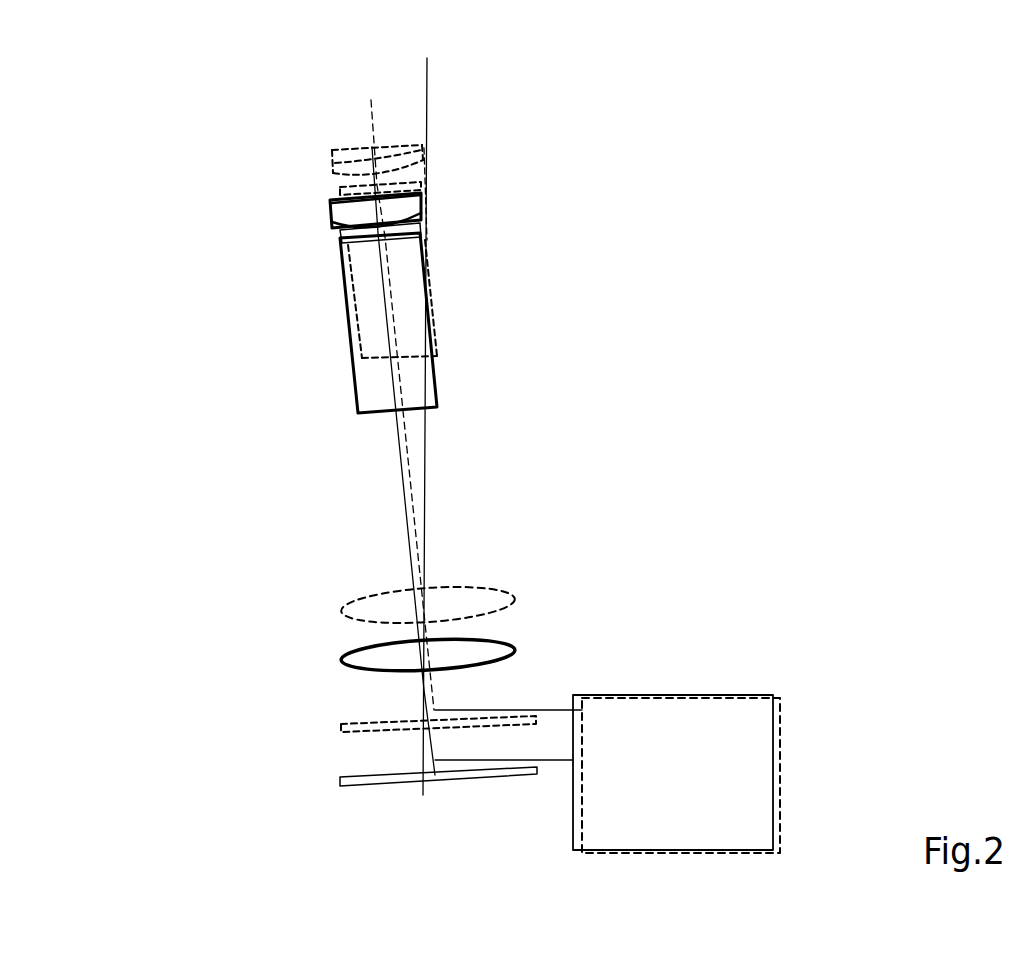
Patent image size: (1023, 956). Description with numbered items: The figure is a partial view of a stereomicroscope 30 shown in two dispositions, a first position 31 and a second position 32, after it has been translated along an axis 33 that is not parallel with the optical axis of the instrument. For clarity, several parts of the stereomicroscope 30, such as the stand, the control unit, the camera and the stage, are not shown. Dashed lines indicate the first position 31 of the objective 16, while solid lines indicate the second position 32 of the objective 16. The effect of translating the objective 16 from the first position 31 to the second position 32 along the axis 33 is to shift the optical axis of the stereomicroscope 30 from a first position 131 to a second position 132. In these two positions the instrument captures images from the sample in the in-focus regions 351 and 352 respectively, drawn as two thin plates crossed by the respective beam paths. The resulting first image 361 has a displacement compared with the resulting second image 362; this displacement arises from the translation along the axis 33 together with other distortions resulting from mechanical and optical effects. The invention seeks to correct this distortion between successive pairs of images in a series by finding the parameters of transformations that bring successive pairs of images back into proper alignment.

The stereomicroscope 30 is at (290, 325).
The first position 31 is at (328, 158).
The second position 32 is at (332, 210).
The axis 33 is at (427, 102).
The objective 16 is at (437, 383).
The first position of the optical axis 131 is at (372, 112).
The second position of the optical axis 132 is at (410, 500).
The first in-focus region 351 is at (340, 728).
The second in-focus region 352 is at (335, 777).
The first image 361 is at (780, 730).
The second image 362 is at (573, 830).